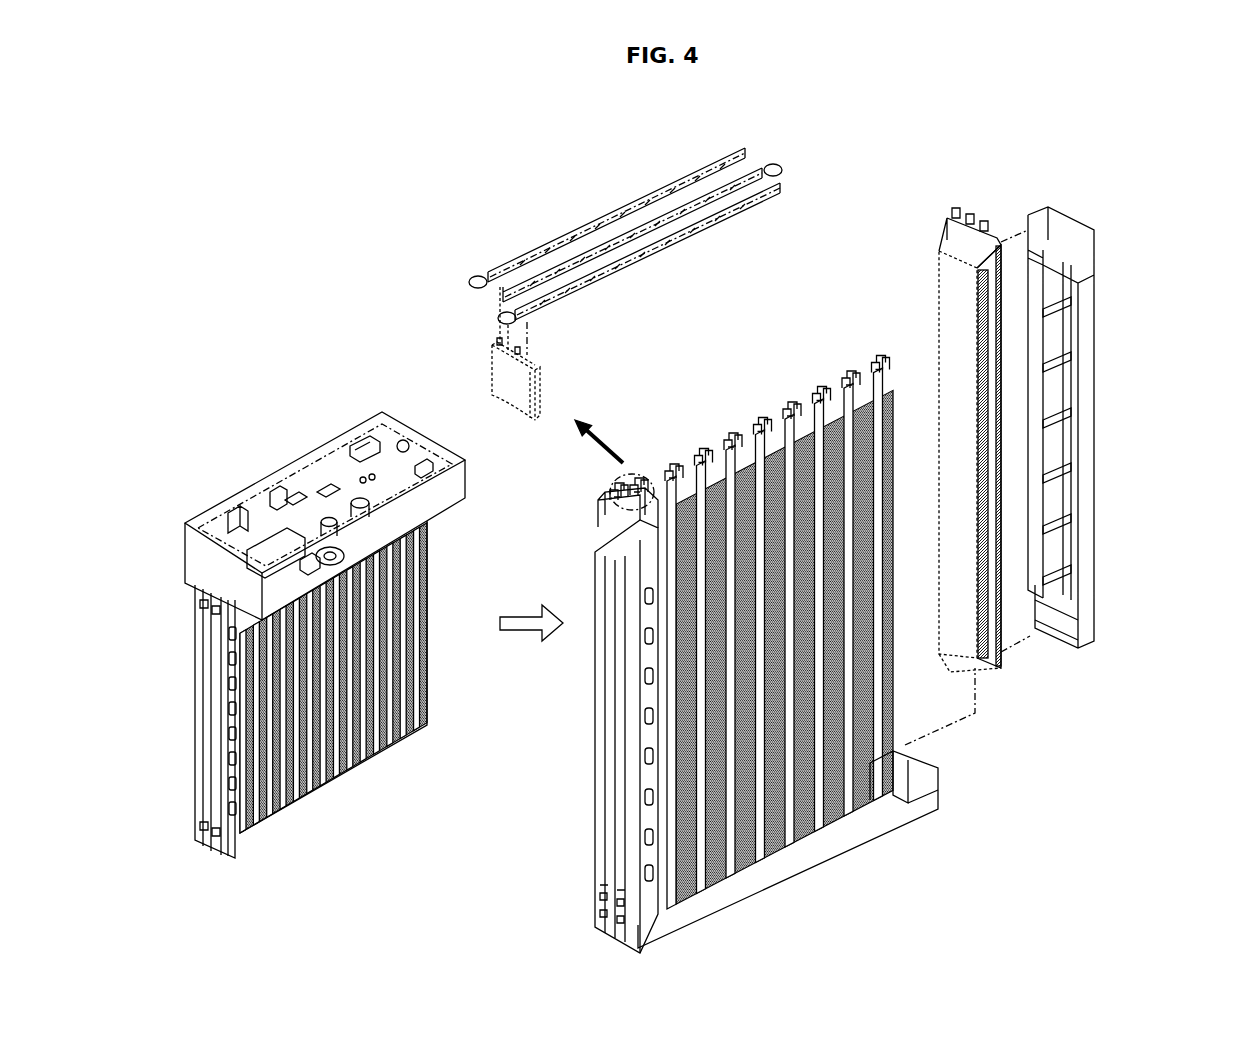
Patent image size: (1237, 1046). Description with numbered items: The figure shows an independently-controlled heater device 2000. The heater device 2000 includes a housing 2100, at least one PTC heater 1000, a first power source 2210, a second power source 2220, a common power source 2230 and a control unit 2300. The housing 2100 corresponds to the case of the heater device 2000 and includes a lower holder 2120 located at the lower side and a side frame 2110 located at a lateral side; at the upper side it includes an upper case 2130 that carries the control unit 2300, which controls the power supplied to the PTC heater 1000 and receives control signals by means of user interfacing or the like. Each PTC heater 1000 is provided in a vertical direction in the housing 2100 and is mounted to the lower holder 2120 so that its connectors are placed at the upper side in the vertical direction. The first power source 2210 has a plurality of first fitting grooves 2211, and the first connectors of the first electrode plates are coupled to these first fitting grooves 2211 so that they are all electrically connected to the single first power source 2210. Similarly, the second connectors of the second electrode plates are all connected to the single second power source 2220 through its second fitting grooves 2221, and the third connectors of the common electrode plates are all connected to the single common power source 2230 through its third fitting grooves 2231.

The PTC heater 1000 is at (960, 238).
The heater device 2000 is at (303, 599).
The housing 2100 is at (658, 652).
The side frame 2110 is at (635, 830).
The lower holder 2120 is at (716, 905).
The upper case 2130 is at (367, 767).
The first power source 2210 is at (778, 200).
The first fitting grooves 2211 is at (630, 285).
The second power source 2220 is at (496, 268).
The second fitting grooves 2221 is at (545, 250).
The common power source 2230 is at (775, 162).
The third fitting grooves 2231 is at (690, 205).
The control unit 2300 is at (273, 520).